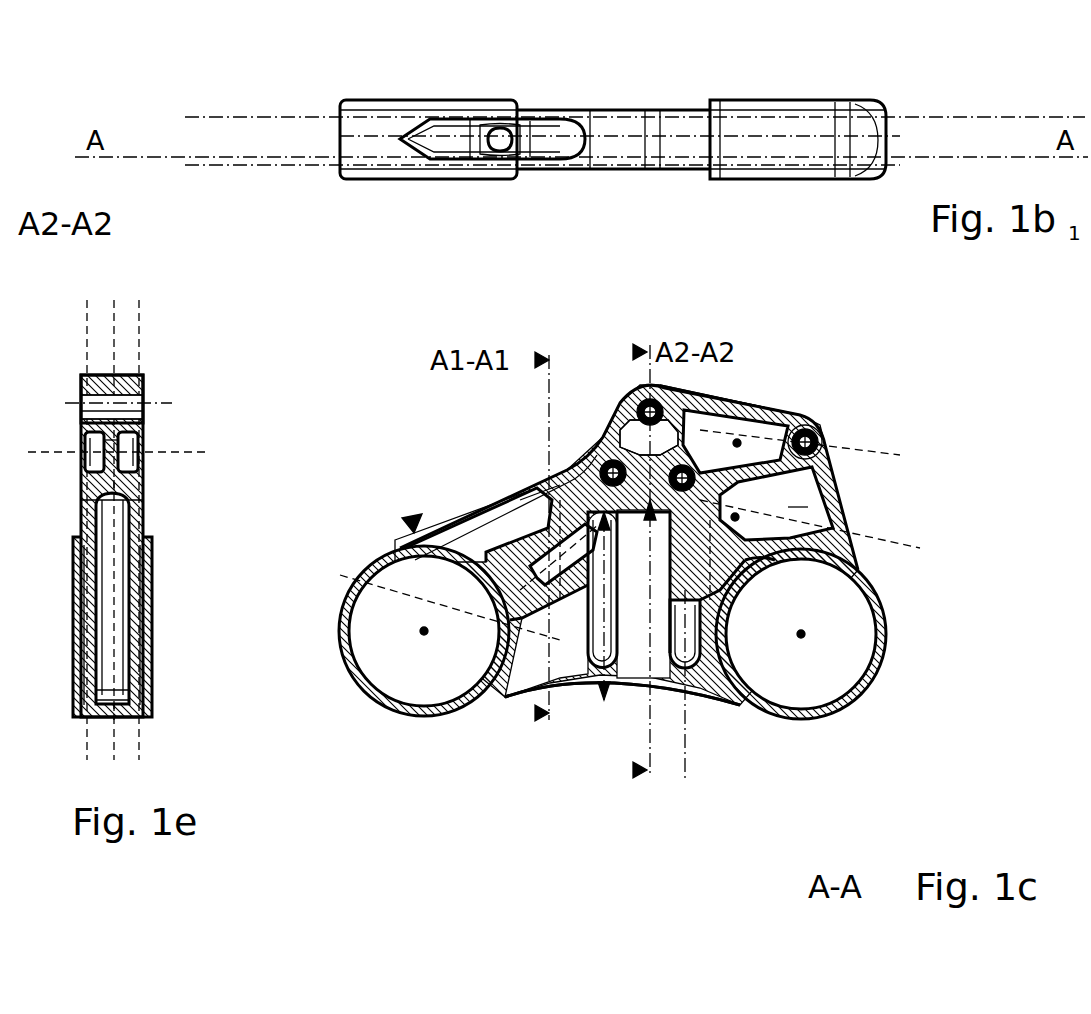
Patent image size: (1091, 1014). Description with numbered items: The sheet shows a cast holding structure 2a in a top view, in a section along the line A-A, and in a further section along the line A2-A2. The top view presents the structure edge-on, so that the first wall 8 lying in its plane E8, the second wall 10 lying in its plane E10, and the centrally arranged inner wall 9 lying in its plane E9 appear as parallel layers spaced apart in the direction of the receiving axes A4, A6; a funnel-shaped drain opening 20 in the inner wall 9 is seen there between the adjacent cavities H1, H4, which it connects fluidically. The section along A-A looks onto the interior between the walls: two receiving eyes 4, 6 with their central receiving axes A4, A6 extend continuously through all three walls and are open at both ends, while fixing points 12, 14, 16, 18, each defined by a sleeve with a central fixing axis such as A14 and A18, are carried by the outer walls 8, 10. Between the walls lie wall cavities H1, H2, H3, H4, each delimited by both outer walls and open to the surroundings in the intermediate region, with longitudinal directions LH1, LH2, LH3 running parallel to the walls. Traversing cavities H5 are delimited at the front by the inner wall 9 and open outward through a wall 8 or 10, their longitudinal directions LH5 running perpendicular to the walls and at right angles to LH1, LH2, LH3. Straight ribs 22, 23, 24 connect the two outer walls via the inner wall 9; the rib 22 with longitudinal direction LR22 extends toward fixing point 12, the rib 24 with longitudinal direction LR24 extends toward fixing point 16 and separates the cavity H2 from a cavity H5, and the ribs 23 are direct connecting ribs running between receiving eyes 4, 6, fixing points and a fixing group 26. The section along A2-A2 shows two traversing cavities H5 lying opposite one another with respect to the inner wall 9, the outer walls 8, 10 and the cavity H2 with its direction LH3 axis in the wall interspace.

In FIG. 1E, the holding structure 2a is at (147, 512).
In FIG. 1C, the holding structure 2a is at (408, 525).
In FIG. 1C, the receiving eye 4 is at (400, 698).
In FIG. 1C, the receiving eye 6 is at (850, 700).
In FIG. 1B, the first wall 8 is at (686, 112).
In FIG. 1E, the first wall 8 is at (80, 655).
In FIG. 1C, the first wall 8 is at (565, 682).
In FIG. 1E, the inner wall 9 is at (86, 462).
In FIG. 1C, the inner wall 9 is at (798, 497).
In FIG. 1B, the second wall 10 is at (676, 170).
In FIG. 1E, the second wall 10 is at (148, 655).
In FIG. 1C, the fixing point 12 is at (602, 420).
In FIG. 1E, the fixing point 14 is at (82, 392).
In FIG. 1C, the fixing point 14 is at (642, 398).
In FIG. 1C, the fixing point 16 is at (750, 420).
In FIG. 1C, the fixing point 18 is at (818, 440).
In FIG. 1B, the funnel-shaped drain opening 20 is at (538, 143).
In FIG. 1C, the rib 22 is at (600, 590).
In FIG. 1C, the rib 23 is at (470, 505).
In FIG. 1C, the rib 24 is at (712, 600).
In FIG. 1C, the fixing group 26 is at (762, 692).
In FIG. 1C, the cavity H1 is at (560, 640).
In FIG. 1E, the cavity H2 is at (130, 580).
In FIG. 1C, the cavity H2 is at (603, 670).
In FIG. 1C, the cavity H3 is at (690, 640).
In FIG. 1B, the cavity H4 is at (462, 128).
In FIG. 1C, the cavity H4 is at (520, 500).
In FIG. 1E, the traversing cavity H5 is at (88, 440).
In FIG. 1C, the traversing cavity H5 is at (520, 500).
In FIG. 1C, the longitudinal direction of cavity H1 LH1 is at (540, 605).
In FIG. 1C, the longitudinal direction of cavity H2 LH2 is at (545, 570).
In FIG. 1E, the longitudinal direction of cavity H3 LH3 is at (110, 605).
In FIG. 1C, the longitudinal direction of cavity H3 LH3 is at (731, 711).
In FIG. 1E, the longitudinal direction of cavity H5 LH5 is at (45, 455).
In FIG. 1C, the longitudinal direction of cavity H5 LH5 is at (792, 425).
In FIG. 1C, the longitudinal direction of rib 22 LR22 is at (575, 505).
In FIG. 1C, the longitudinal direction of rib 24 LR24 is at (700, 615).
In FIG. 1C, the receiving axis A4 is at (422, 635).
In FIG. 1C, the receiving axis A6 is at (830, 690).
In FIG. 1E, the fixing axis A14 is at (158, 403).
In FIG. 1C, the fixing axis A18 is at (822, 440).
In FIG. 1B, the plane E8 is at (262, 117).
In FIG. 1E, the plane E8 is at (85, 350).
In FIG. 1B, the plane E9 is at (615, 125).
In FIG. 1E, the plane E9 is at (116, 303).
In FIG. 1B, the plane E10 is at (283, 167).
In FIG. 1E, the plane E10 is at (183, 330).